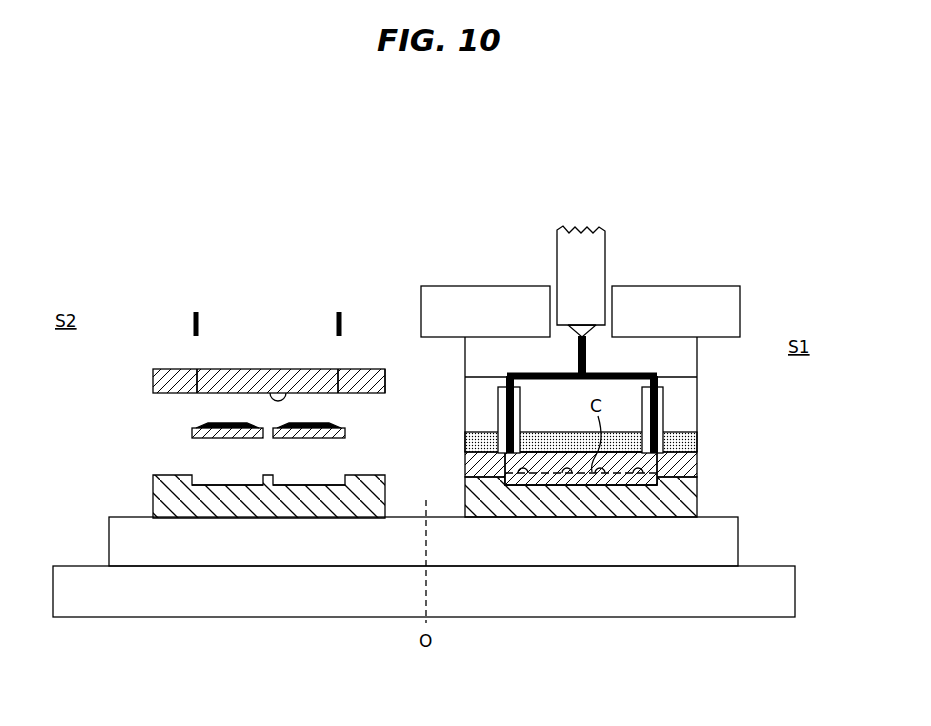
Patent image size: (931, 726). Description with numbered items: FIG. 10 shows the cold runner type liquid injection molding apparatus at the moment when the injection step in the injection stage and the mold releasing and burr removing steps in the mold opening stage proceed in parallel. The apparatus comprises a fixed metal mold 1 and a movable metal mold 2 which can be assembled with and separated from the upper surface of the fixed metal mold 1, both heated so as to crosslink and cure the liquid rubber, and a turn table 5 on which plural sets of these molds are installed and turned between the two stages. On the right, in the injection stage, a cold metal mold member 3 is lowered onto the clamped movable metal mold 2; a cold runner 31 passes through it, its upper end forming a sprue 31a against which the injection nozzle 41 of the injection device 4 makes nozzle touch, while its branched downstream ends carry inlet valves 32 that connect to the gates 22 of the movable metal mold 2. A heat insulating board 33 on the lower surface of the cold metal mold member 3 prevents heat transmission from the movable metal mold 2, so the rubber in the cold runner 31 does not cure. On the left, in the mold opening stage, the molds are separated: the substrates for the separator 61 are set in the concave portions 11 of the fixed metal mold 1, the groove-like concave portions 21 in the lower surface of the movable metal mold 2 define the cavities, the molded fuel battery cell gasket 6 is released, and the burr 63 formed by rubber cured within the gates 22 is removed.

The fixed metal mold 1 is at (152, 492).
The movable metal mold 2 is at (152, 385).
The cold metal mold member 3 is at (682, 352).
The injection device 4 is at (583, 237).
The turn table 5 is at (224, 624).
The fuel battery cell gasket 6 is at (190, 431).
The concave portions 11 is at (328, 478).
The groove-like concave portions 21 is at (265, 369).
The gates 22 is at (370, 386).
The cold runner 31 is at (548, 370).
The sprue 31a is at (585, 335).
The inlet valves 32 is at (665, 412).
The heat insulating board 33 is at (487, 440).
The injection nozzle 41 is at (568, 317).
The separator 61 is at (535, 487).
The burr 63 is at (194, 318).